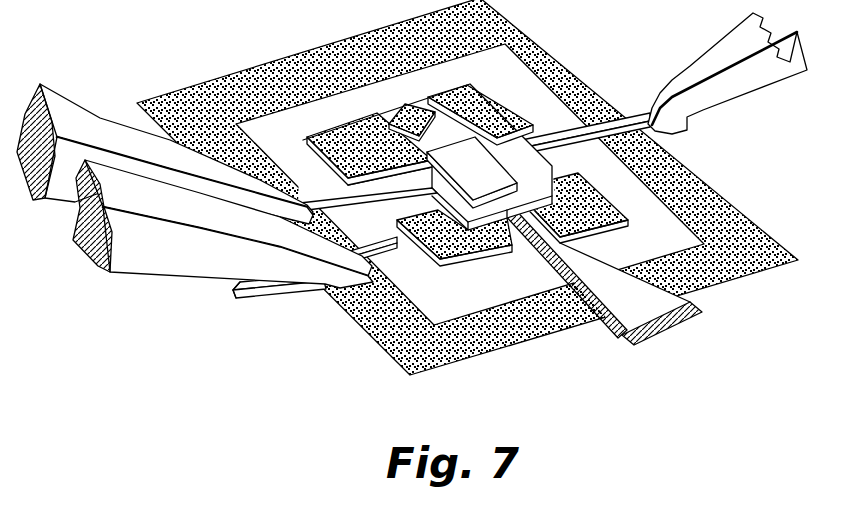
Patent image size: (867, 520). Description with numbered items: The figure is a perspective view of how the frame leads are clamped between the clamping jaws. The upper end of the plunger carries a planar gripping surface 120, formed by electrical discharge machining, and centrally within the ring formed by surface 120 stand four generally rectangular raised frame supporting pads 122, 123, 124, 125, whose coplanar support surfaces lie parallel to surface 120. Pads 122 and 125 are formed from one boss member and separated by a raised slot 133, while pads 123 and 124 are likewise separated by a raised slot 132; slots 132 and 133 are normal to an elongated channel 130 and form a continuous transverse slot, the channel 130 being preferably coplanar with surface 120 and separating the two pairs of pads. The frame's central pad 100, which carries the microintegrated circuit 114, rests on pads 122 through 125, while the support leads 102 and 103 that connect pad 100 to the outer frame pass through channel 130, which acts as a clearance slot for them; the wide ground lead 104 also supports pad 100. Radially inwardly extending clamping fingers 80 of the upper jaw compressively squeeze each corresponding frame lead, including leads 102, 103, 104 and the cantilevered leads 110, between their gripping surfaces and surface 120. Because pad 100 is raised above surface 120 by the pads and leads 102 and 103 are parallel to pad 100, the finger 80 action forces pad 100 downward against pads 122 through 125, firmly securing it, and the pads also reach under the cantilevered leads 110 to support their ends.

The clamping finger 80 is at (88, 110).
The central pad 100 is at (453, 130).
The support lead 102 is at (569, 134).
The support lead 103 is at (337, 200).
The ground lead 104 is at (587, 260).
The lead 110 is at (275, 283).
The microintegrated circuit 114 is at (483, 170).
The gripping surface 120 is at (457, 347).
The frame supporting pad 122 is at (500, 45).
The frame supporting pad 123 is at (662, 180).
The frame supporting pad 124 is at (453, 267).
The frame supporting pad 125 is at (323, 132).
The channel 130 is at (390, 218).
The raised slot 132 is at (518, 250).
The raised slot 133 is at (417, 107).